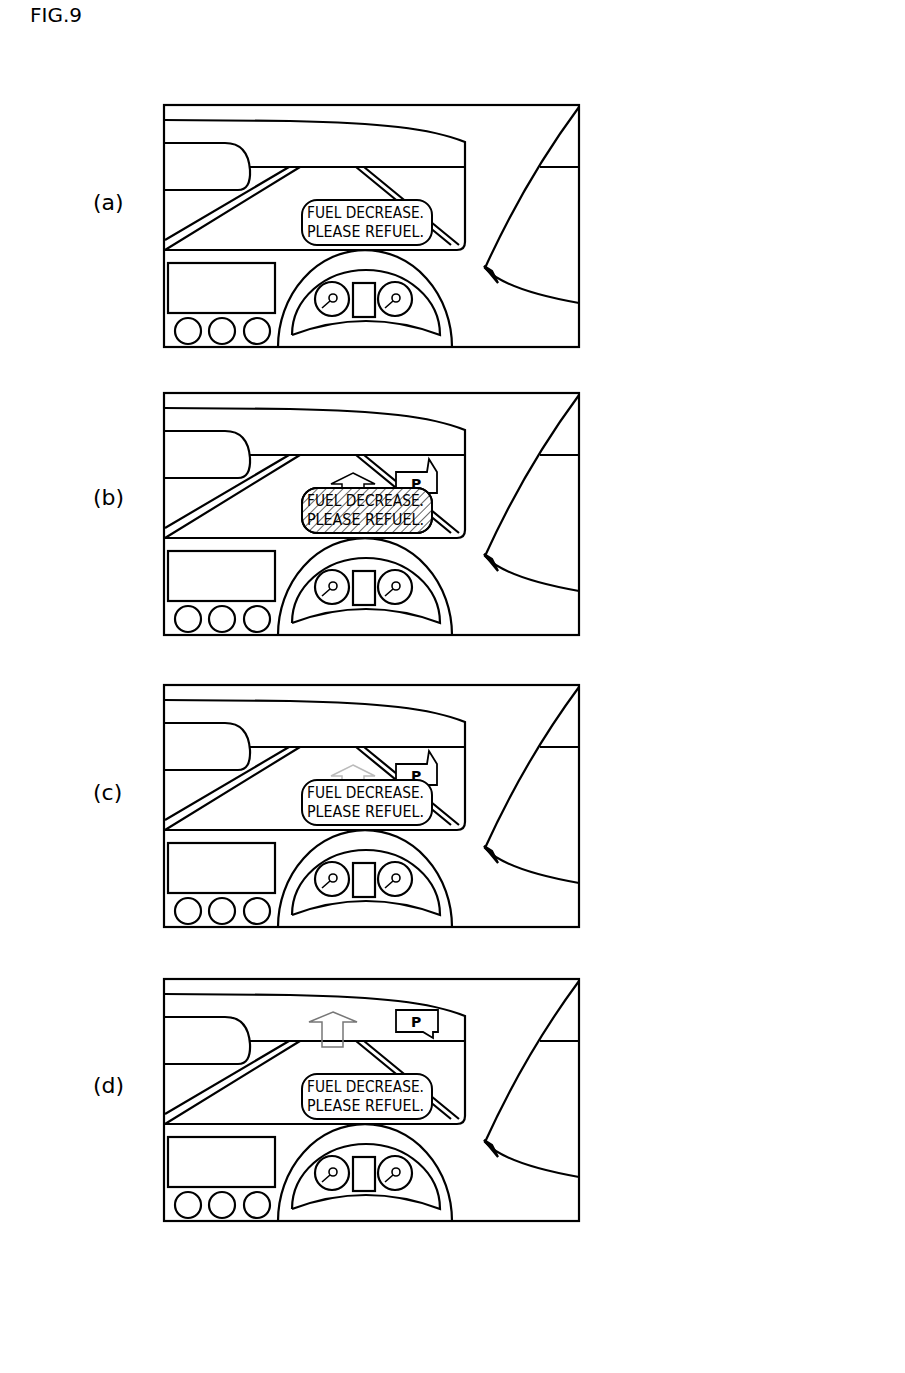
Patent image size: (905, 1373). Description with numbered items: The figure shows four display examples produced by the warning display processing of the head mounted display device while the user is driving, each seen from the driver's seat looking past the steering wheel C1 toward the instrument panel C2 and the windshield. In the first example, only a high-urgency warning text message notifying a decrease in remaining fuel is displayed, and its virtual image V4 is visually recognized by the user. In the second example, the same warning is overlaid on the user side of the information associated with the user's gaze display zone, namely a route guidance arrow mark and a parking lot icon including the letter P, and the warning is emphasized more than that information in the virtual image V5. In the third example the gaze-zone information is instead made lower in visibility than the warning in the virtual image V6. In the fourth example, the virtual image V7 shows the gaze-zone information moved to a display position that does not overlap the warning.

The steering wheel C1 is at (446, 344).
The instrument panel C2 is at (167, 259).
The virtual image V4 is at (432, 222).
The virtual image V5 is at (403, 492).
The virtual image V6 is at (403, 784).
The virtual image V7 is at (403, 1064).